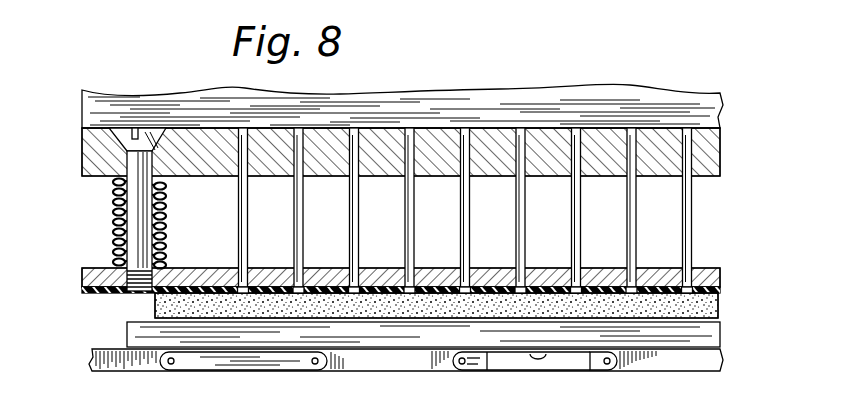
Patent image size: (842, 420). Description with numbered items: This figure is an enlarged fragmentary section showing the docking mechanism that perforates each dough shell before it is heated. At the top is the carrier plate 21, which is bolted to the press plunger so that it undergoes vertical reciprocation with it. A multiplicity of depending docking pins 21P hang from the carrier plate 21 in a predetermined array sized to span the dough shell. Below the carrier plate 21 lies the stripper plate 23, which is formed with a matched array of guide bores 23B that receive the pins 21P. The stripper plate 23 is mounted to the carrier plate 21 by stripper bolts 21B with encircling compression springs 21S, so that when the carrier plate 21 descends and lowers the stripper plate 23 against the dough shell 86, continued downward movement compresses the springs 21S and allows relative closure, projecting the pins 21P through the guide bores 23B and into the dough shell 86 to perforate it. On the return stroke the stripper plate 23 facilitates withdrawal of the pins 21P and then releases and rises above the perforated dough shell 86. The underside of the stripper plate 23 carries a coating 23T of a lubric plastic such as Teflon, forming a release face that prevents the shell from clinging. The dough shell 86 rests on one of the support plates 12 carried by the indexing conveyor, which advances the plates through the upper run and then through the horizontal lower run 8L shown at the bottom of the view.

The carrier plate 21 is at (381, 147).
The docking pins 21P is at (293, 231).
The compression springs 21S is at (114, 209).
The stripper bolts 21B is at (140, 216).
The stripper plate 23 is at (703, 272).
The coating 23T is at (112, 294).
The guide bores 23B is at (459, 295).
The dough shell 86 is at (365, 305).
The support plates 12 is at (353, 338).
The lower run 8L is at (505, 372).